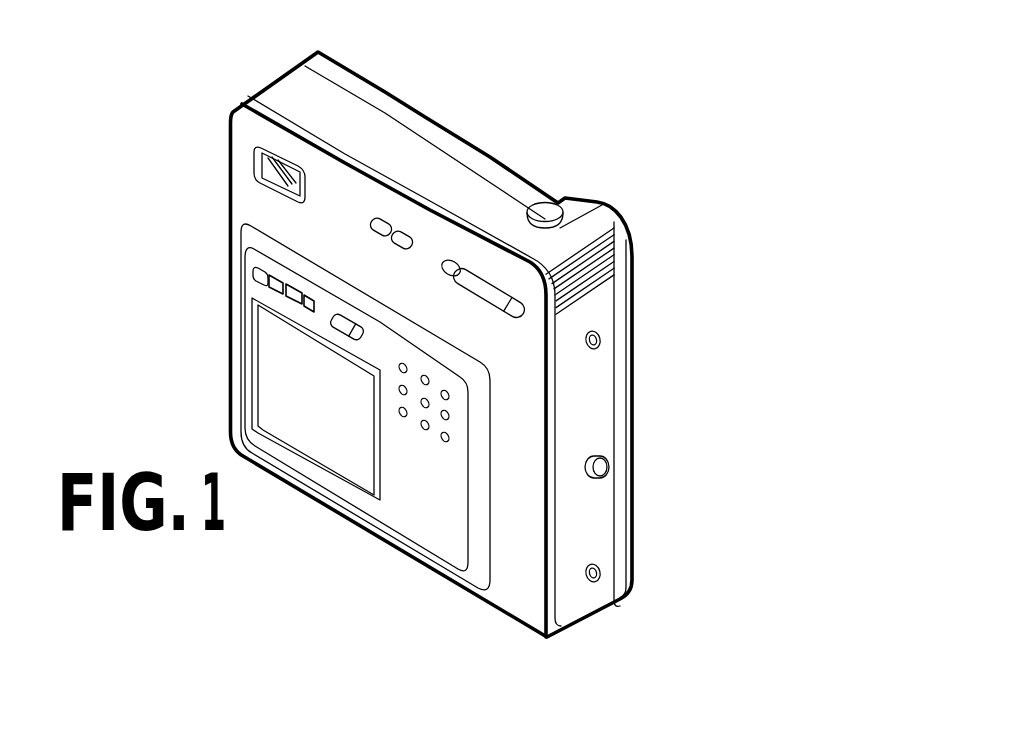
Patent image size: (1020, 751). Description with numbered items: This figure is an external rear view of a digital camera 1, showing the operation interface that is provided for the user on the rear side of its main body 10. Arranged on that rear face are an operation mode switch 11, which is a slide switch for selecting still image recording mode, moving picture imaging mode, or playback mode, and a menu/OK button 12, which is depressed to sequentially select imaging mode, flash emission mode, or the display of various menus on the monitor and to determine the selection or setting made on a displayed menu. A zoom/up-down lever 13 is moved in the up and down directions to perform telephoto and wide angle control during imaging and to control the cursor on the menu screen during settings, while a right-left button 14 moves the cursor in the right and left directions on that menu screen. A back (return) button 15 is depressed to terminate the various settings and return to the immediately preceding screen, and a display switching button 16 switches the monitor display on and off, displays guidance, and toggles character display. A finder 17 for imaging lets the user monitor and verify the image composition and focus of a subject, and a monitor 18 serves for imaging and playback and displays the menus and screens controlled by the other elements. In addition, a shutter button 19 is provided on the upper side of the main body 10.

The digital camera 1 is at (441, 66).
The main body 10 is at (465, 148).
The operation mode switch 11 is at (338, 333).
The menu/OK button 12 is at (292, 300).
The zoom/up-down lever 13 is at (482, 278).
The right-left button 14 is at (463, 258).
The back (return) button 15 is at (253, 298).
The display switching button 16 is at (254, 272).
The finder 17 is at (253, 158).
The monitor 18 is at (280, 408).
The shutter button 19 is at (547, 212).